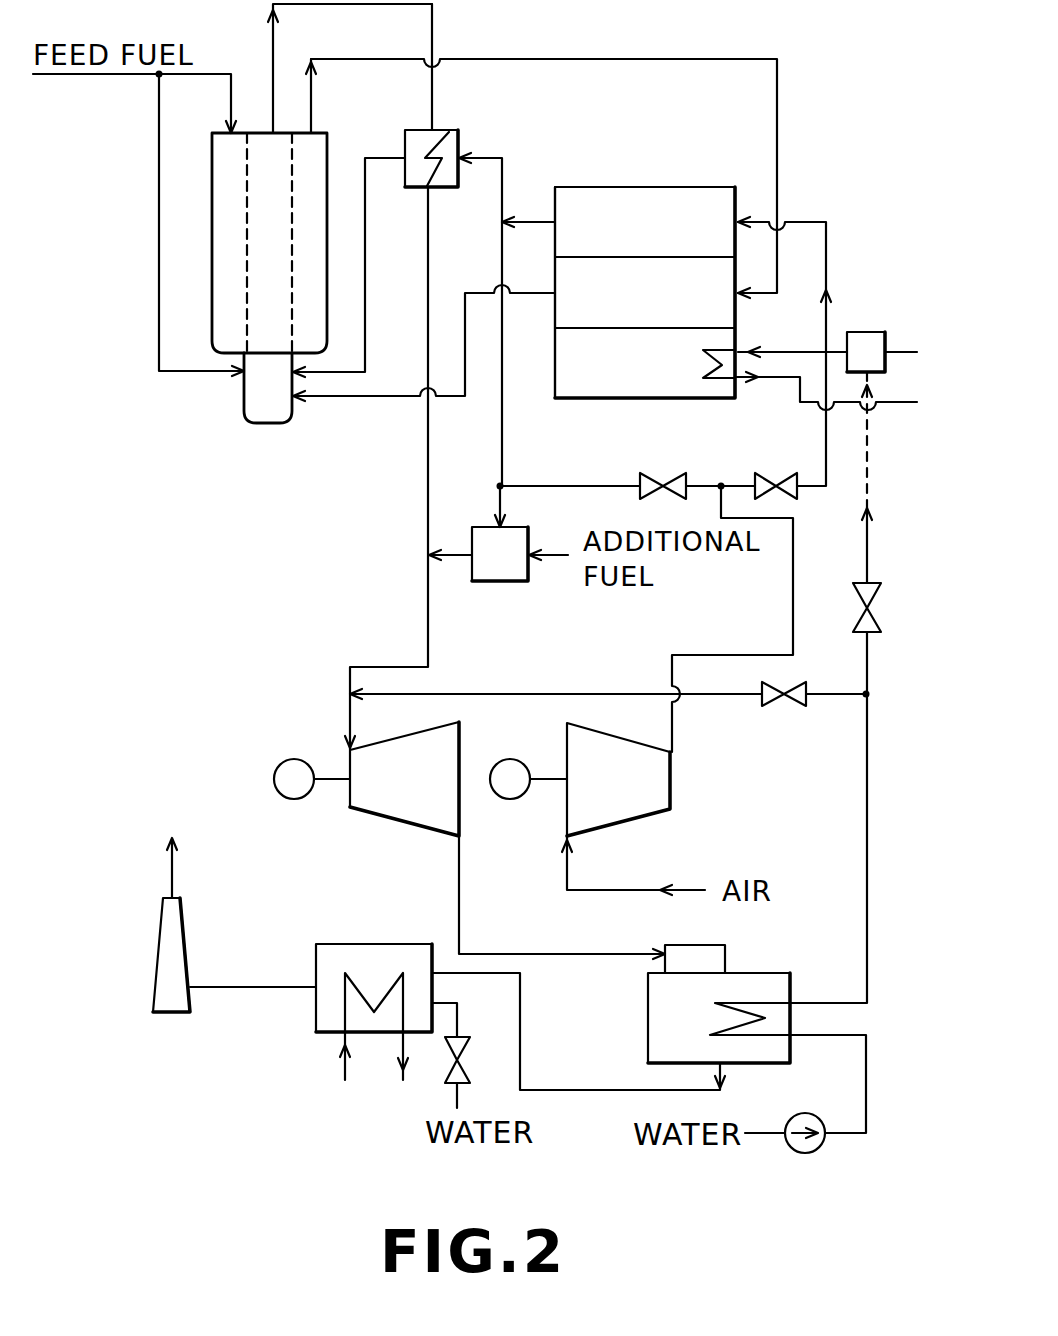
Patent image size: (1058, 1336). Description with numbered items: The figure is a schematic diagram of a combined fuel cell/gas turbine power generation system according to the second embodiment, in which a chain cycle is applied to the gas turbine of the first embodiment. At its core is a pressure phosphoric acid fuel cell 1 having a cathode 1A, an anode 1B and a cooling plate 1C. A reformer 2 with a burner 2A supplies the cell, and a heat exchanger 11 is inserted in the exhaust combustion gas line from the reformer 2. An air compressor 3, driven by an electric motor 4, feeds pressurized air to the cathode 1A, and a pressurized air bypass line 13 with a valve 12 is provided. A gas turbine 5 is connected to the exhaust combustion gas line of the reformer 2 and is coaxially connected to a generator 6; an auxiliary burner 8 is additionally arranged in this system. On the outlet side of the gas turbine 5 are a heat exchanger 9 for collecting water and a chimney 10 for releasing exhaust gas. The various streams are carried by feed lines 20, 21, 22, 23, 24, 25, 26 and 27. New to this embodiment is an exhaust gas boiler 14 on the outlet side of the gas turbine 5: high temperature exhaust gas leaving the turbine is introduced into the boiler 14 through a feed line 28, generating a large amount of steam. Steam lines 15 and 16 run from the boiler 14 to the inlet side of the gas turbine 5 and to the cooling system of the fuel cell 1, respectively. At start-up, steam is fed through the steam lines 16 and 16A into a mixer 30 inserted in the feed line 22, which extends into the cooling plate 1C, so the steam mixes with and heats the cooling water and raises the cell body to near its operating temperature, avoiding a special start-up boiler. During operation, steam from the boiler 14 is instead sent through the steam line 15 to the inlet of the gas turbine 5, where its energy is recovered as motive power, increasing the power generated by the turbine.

The pressure phosphoric acid fuel cell 1 is at (645, 269).
The cathode 1A is at (645, 222).
The anode 1B is at (645, 292).
The cooling plate 1C is at (645, 363).
The reformer 2 is at (210, 231).
The burner 2A is at (244, 405).
The air compressor 3 is at (622, 823).
The electric motor 4 is at (503, 800).
The gas turbine 5 is at (388, 812).
The generator 6 is at (297, 800).
The auxiliary burner 8 is at (493, 583).
The heat exchanger for collecting water 9 is at (376, 938).
The chimney 10 is at (185, 945).
The heat exchanger 11 is at (445, 130).
The valve 12 is at (665, 473).
The pressurized air bypass line 13 is at (700, 486).
The exhaust gas boiler 14 is at (648, 1012).
The steam line 15 is at (718, 696).
The steam line 16 is at (866, 815).
The steam line 16A is at (895, 470).
The feed line 20 is at (793, 556).
The feed line 21 is at (688, 59).
The feed line 22 is at (812, 333).
The feed line 23 is at (505, 178).
The feed line 24 is at (503, 362).
The feed line 25 is at (388, 396).
The feed line 26 is at (433, 32).
The feed line 27 is at (455, 552).
The feed line 28 is at (461, 905).
The mixer 30 is at (866, 332).